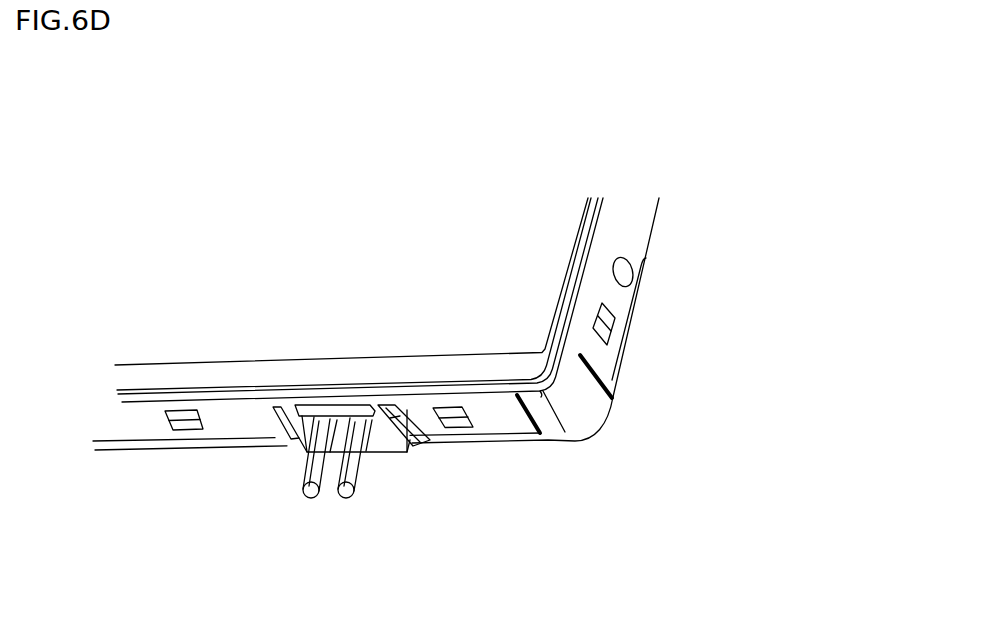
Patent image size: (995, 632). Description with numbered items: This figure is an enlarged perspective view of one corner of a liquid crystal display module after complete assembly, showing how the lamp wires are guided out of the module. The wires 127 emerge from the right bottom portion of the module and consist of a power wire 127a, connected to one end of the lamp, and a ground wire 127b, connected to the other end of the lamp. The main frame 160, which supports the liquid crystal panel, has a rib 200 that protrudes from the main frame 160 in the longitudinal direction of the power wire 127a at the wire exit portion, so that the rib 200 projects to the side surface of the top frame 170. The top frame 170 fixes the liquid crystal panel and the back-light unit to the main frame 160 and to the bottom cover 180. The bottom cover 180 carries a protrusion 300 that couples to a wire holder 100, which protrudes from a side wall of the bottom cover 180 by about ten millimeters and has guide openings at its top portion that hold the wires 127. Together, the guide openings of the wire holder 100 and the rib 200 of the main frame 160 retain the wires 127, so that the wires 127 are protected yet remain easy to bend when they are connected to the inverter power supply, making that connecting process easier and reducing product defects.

The wire holder 100 is at (377, 448).
The wires 127 is at (341, 499).
The power wire 127a is at (354, 474).
The ground wire 127b is at (313, 498).
The main frame 160 is at (593, 402).
The top frame 170 is at (581, 230).
The bottom cover 180 is at (640, 288).
The rib 200 is at (345, 407).
The protrusion 300 is at (407, 440).